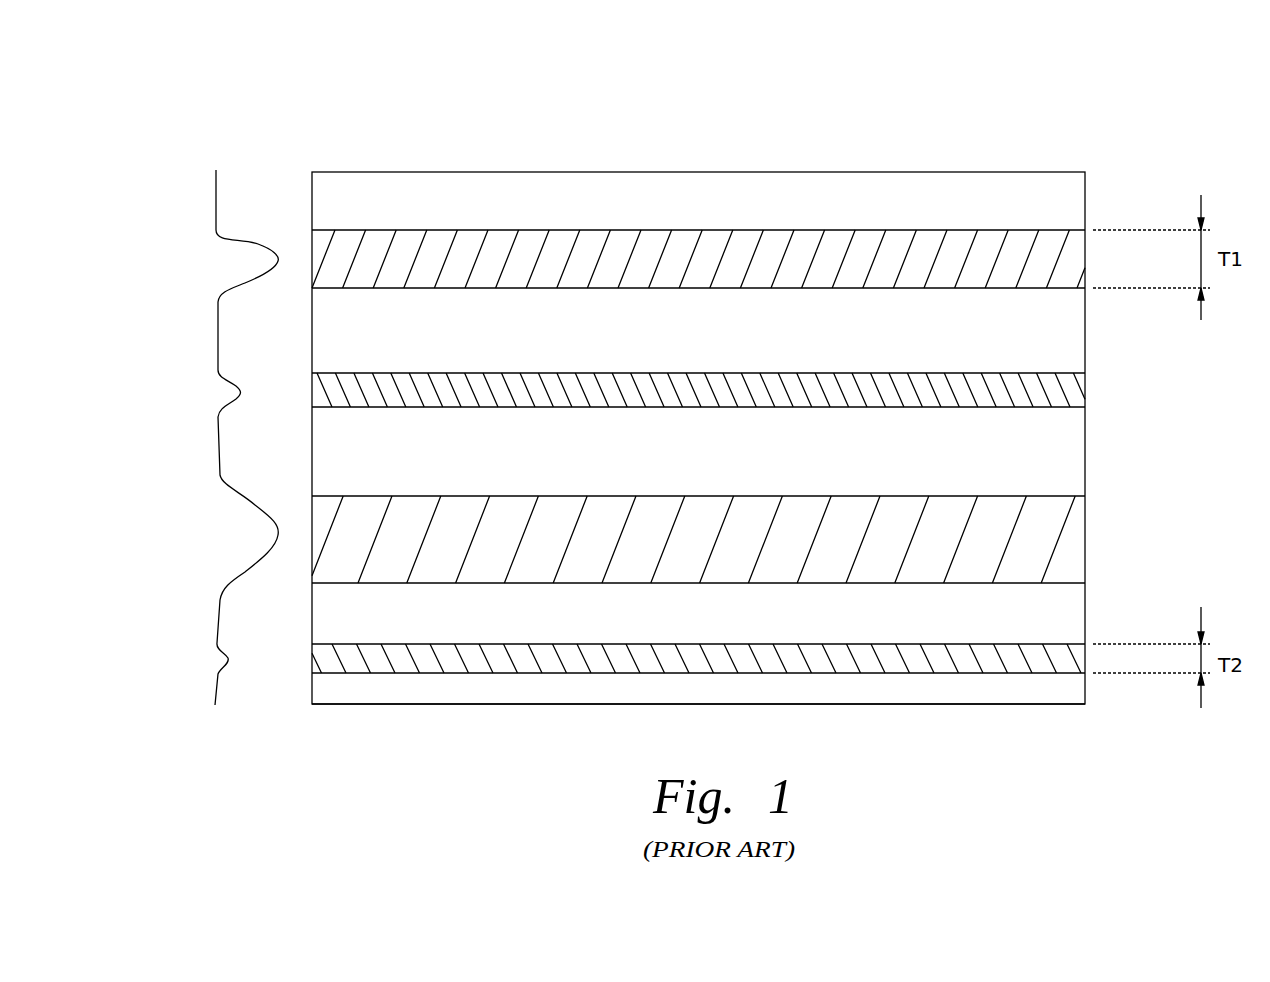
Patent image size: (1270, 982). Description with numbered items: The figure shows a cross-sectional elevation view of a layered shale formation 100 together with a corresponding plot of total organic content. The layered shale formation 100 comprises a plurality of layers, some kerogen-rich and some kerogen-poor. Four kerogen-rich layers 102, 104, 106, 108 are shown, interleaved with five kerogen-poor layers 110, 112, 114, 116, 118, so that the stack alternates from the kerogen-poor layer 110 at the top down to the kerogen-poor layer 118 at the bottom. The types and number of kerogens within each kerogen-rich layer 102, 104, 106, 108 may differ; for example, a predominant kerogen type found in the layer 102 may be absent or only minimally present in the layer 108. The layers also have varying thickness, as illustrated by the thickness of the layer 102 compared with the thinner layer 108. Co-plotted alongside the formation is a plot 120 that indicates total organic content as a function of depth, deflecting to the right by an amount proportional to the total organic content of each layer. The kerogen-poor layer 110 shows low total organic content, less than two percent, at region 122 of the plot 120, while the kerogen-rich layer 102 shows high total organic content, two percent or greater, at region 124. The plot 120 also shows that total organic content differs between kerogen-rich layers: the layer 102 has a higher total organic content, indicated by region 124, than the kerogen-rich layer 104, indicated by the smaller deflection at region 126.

The layered shale formation 100 is at (378, 86).
The kerogen-rich layer 102 is at (1083, 258).
The kerogen-rich layer 104 is at (1083, 390).
The kerogen-rich layer 106 is at (1083, 534).
The kerogen-rich layer 108 is at (1083, 659).
The kerogen-poor layer 110 is at (1083, 200).
The kerogen-poor layer 112 is at (1083, 333).
The kerogen-poor layer 114 is at (1083, 448).
The kerogen-poor layer 116 is at (1083, 612).
The kerogen-poor layer 118 is at (1083, 688).
The plot 120 is at (194, 415).
The region of the plot 122 is at (214, 200).
The region of the plot 124 is at (276, 260).
The region of the plot 126 is at (237, 392).